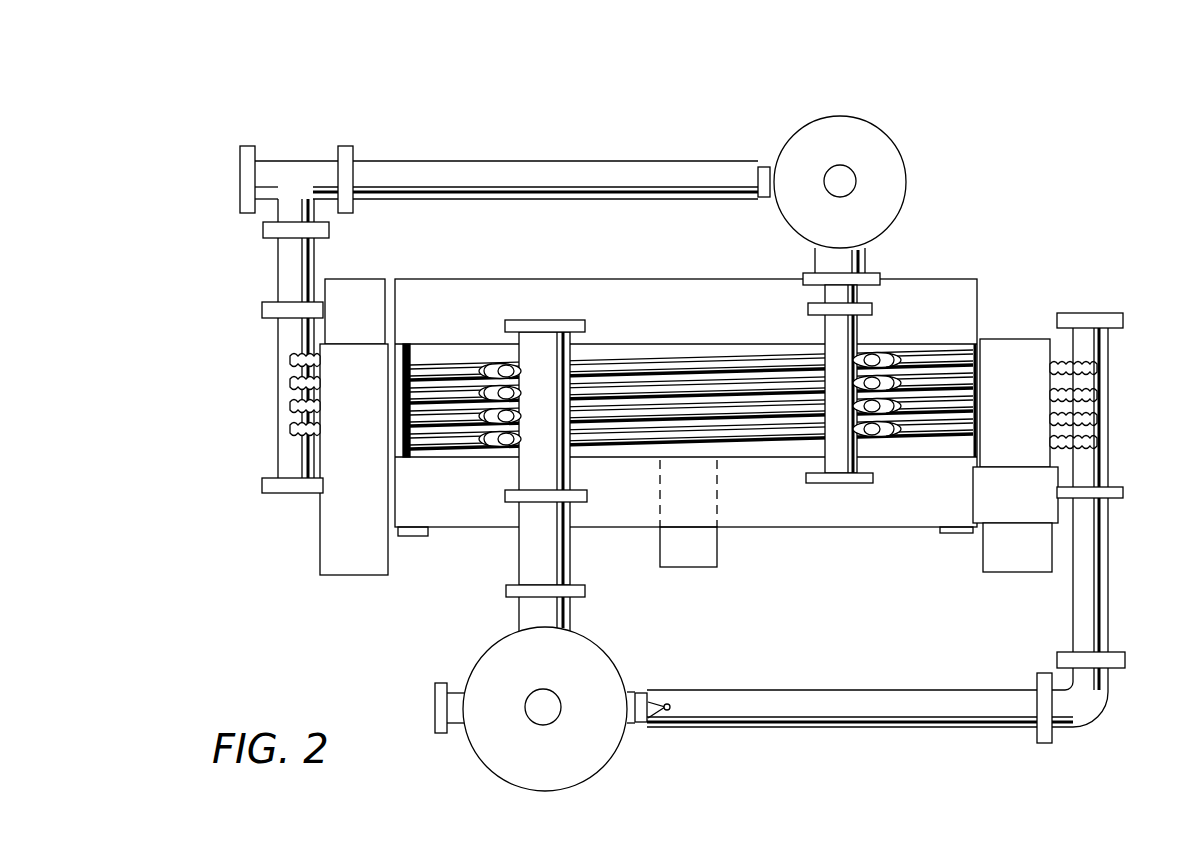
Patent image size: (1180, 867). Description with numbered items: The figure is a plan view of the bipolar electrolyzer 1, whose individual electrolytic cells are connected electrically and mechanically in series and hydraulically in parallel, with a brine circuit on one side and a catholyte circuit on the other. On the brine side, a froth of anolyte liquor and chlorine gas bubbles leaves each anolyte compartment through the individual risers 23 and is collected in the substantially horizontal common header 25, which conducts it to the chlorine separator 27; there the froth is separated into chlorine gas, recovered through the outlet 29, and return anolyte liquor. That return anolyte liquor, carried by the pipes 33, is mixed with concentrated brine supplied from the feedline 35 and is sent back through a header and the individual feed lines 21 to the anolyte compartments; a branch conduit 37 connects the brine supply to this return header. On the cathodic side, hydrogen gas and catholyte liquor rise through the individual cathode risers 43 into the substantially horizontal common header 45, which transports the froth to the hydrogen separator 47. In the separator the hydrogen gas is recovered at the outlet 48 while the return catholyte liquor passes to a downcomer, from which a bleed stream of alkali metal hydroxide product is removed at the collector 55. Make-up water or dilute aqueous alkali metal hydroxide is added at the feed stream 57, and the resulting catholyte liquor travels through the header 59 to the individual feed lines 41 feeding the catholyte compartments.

The bipolar electrolyzer 1 is at (358, 600).
The feed lines 21 is at (290, 360).
The anolyte and chlorine risers 23 is at (852, 356).
The common header 25 is at (825, 323).
The chlorine separator 27 is at (860, 118).
The outlet 29 is at (857, 180).
The pipes 33 is at (722, 161).
The feedline 35 is at (240, 162).
The branch conduit 37 is at (278, 341).
The feed lines 41 is at (1090, 368).
The cathode risers 43 is at (495, 472).
The common header 45 is at (573, 540).
The hydrogen separator 47 is at (603, 646).
The outlet 48 is at (562, 705).
The collector 55 is at (658, 702).
The feed stream 57 is at (457, 692).
The header 59 is at (1110, 521).